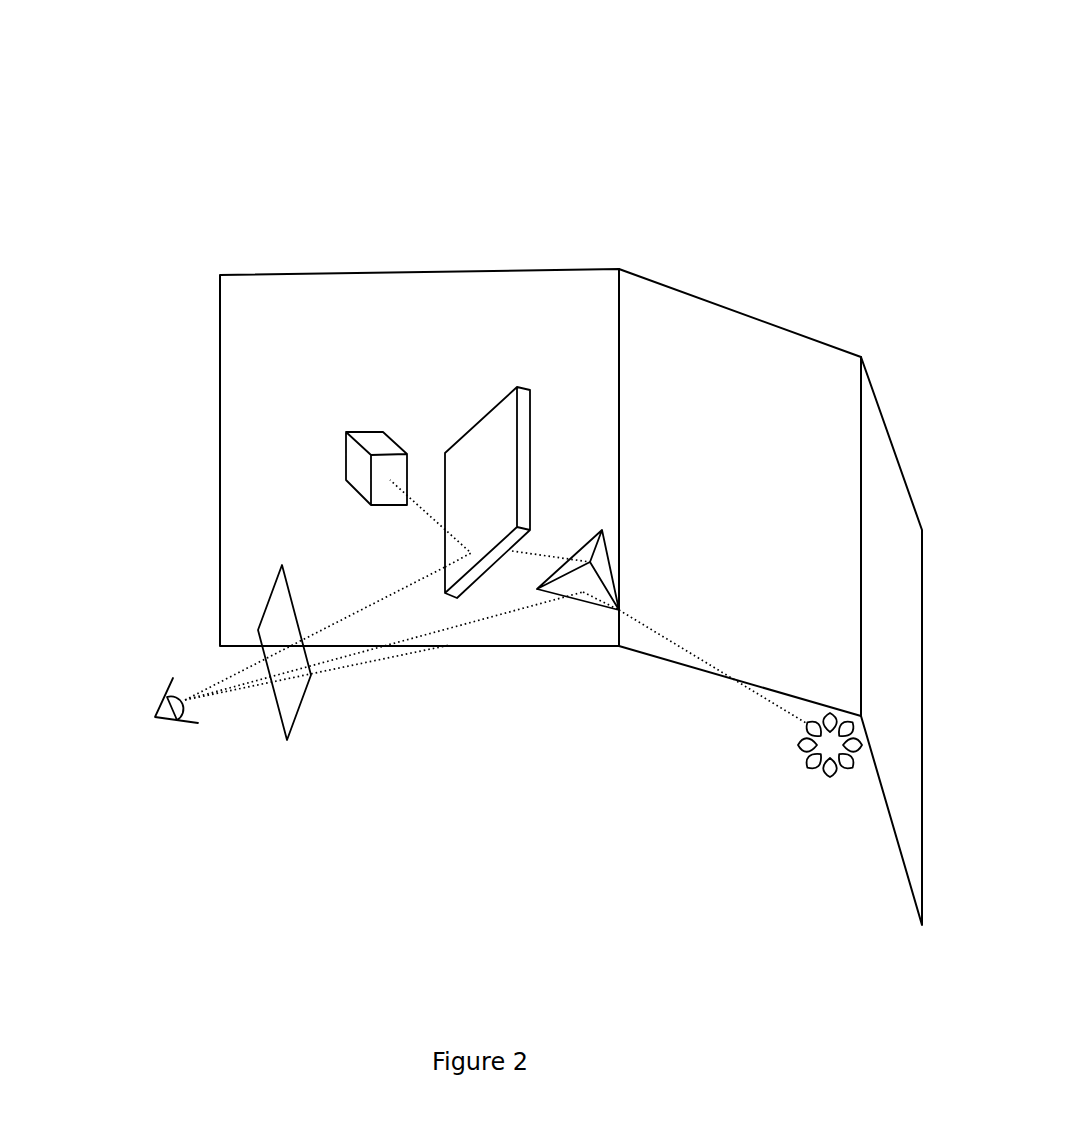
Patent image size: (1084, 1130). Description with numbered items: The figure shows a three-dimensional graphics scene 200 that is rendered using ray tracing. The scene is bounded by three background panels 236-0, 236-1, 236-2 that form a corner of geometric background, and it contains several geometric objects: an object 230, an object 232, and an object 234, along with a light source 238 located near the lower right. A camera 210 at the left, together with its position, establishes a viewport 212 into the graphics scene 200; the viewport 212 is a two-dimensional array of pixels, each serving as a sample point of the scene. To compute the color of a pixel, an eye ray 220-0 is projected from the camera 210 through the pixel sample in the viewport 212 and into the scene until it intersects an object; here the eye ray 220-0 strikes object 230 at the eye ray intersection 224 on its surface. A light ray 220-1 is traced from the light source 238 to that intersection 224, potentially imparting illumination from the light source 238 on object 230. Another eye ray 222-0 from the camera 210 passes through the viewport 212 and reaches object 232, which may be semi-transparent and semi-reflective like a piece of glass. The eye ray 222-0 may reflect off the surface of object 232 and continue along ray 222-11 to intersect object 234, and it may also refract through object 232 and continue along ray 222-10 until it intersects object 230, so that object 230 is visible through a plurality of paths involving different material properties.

The three-dimensional graphics scene 200 is at (740, 101).
The camera 210 is at (155, 712).
The viewport 212 is at (297, 720).
The eye ray 220-0 is at (453, 628).
The light ray 220-1 is at (660, 637).
The eye ray 222-0 is at (238, 677).
The ray 222-10 is at (542, 555).
The ray 222-11 is at (422, 508).
The eye ray intersection 224 is at (583, 592).
The object 230 is at (607, 547).
The object 232 is at (515, 387).
The object 234 is at (363, 430).
The background panel 236-0 is at (313, 273).
The background panel 236-1 is at (643, 277).
The background panel 236-2 is at (878, 398).
The light source 238 is at (830, 778).